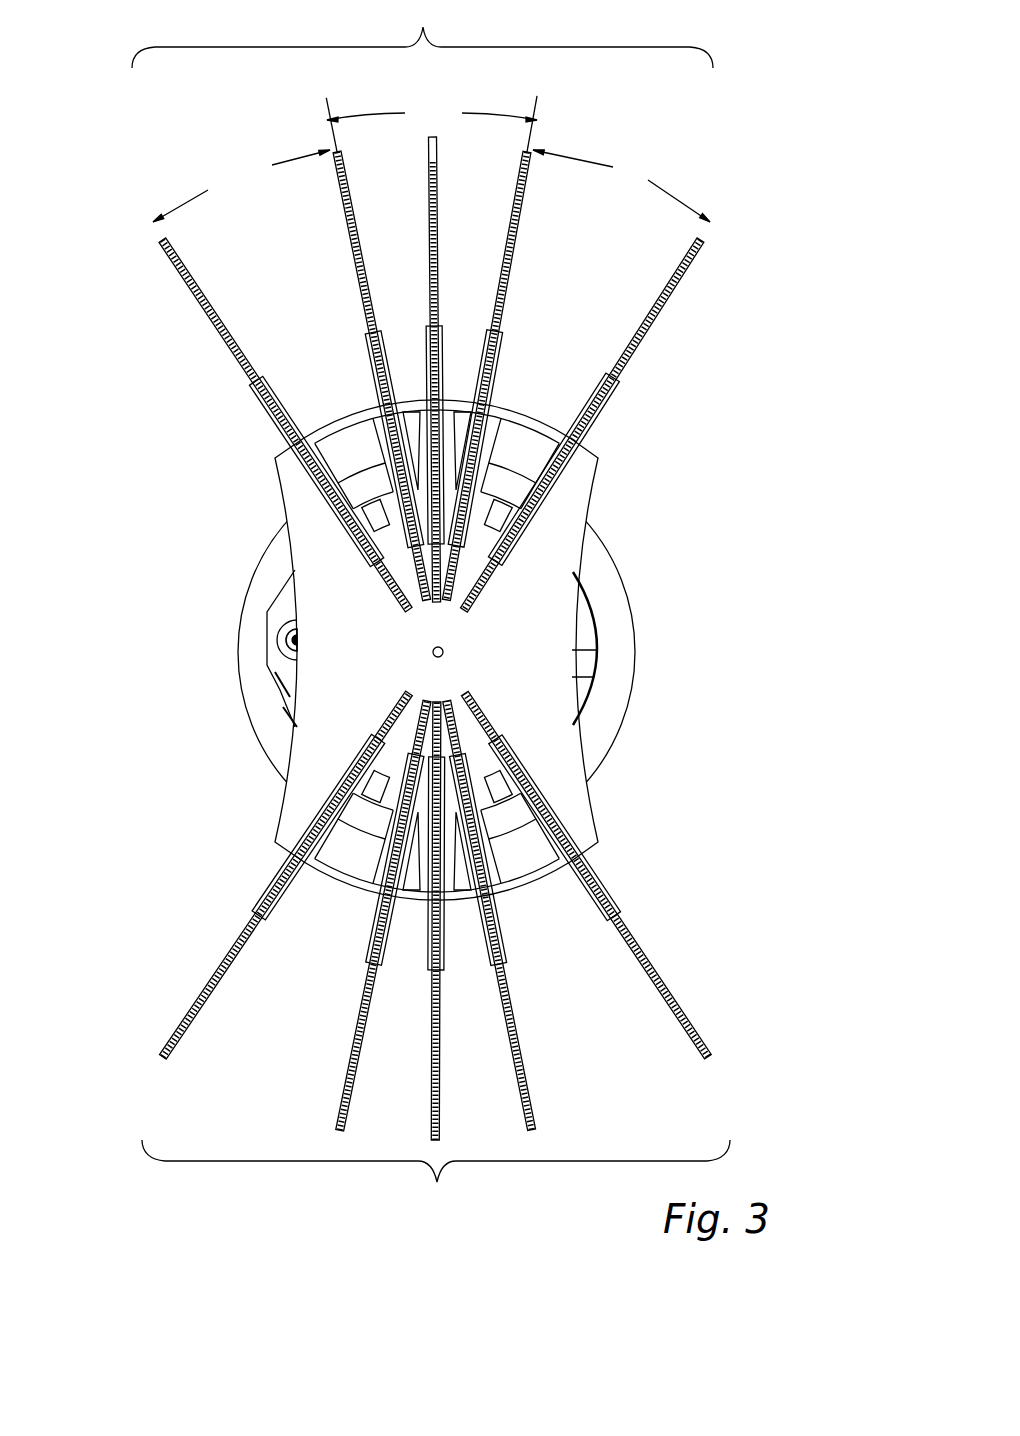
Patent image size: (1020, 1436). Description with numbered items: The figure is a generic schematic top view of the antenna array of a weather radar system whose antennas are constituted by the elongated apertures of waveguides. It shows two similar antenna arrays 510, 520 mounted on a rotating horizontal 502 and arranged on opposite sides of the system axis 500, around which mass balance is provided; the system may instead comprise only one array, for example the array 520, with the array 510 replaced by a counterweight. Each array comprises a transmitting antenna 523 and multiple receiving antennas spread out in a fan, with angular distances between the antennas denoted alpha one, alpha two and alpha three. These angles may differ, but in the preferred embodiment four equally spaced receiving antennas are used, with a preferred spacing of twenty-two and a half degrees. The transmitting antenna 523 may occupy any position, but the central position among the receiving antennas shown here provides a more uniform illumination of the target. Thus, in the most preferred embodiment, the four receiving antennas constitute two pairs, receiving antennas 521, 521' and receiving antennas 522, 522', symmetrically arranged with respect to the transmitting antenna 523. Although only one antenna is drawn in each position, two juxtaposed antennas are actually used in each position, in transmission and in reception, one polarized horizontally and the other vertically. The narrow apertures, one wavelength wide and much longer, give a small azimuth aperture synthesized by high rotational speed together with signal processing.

The system axis 500 is at (443, 652).
The rotating horizontal 502 is at (563, 743).
The antenna array 510 is at (436, 954).
The antenna array 520 is at (432, 307).
The receiving antenna 521 is at (262, 425).
The receiving antenna 521' is at (606, 425).
The receiving antenna 522 is at (359, 348).
The receiving antenna 522' is at (509, 348).
The transmitting antenna 523 is at (453, 369).